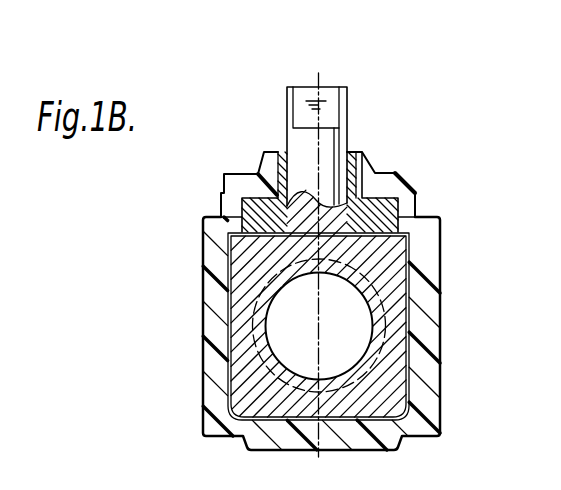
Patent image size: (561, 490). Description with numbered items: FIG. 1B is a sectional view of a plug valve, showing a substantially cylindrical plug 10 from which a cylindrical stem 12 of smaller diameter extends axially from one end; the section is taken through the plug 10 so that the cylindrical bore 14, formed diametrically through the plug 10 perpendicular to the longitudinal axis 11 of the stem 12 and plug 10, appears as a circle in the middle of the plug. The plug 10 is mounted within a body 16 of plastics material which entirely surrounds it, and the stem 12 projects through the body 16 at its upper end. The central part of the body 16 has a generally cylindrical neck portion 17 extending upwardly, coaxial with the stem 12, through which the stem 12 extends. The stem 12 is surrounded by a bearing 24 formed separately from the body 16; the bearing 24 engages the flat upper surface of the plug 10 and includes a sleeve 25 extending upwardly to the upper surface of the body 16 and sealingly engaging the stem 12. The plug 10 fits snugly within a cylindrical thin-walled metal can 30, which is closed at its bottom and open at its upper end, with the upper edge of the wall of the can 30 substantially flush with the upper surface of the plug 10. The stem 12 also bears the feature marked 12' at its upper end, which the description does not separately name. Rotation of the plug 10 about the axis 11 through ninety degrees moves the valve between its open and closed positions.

The plug 10 is at (230, 258).
The longitudinal axis 11 is at (327, 64).
The stem 12 is at (343, 147).
The tube bore 12' is at (292, 102).
The bore 14 is at (378, 333).
The body 16 is at (207, 350).
The neck portion 17 is at (220, 201).
The bearing 24 is at (380, 208).
The sleeve 25 is at (277, 166).
The metal can 30 is at (411, 283).